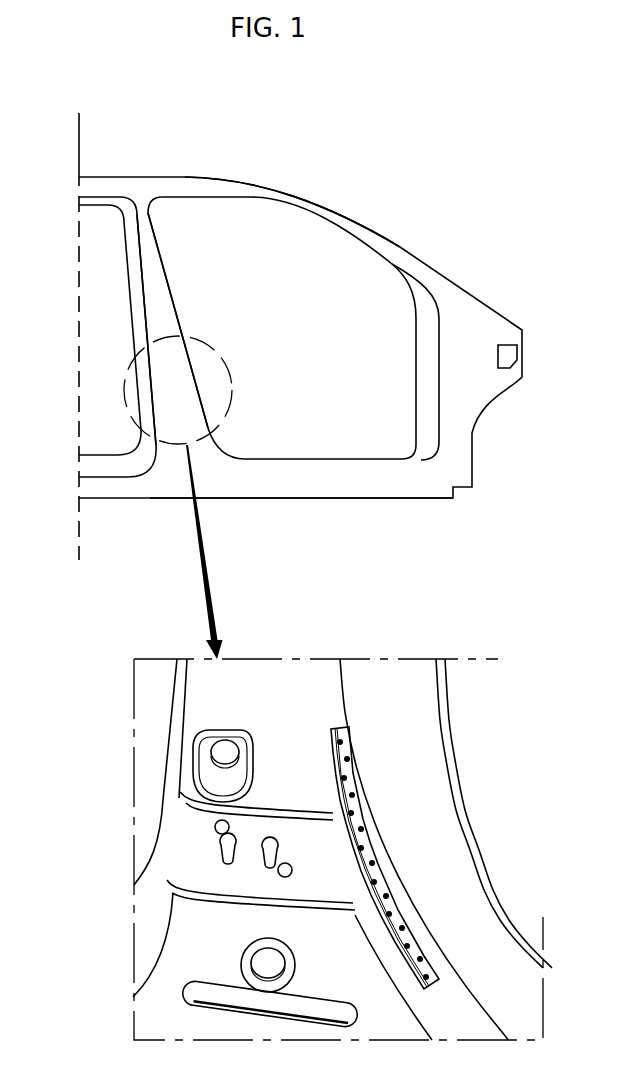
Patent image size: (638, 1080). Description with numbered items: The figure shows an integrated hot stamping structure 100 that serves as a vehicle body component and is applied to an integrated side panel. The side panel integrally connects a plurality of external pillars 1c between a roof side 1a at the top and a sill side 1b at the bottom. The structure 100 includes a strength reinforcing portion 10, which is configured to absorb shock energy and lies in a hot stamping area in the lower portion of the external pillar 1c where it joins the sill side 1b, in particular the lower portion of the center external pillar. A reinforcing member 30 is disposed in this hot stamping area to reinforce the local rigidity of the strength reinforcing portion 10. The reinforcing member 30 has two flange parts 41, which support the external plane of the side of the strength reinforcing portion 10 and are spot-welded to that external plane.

The integrated hot stamping structure 100 is at (306, 118).
The roof side 1a is at (158, 191).
The sill side 1b is at (237, 483).
The external pillar 1c is at (165, 304).
The strength reinforcing portion 10 is at (194, 320).
The reinforcing member 30 is at (372, 792).
The flange parts 41 is at (333, 752).